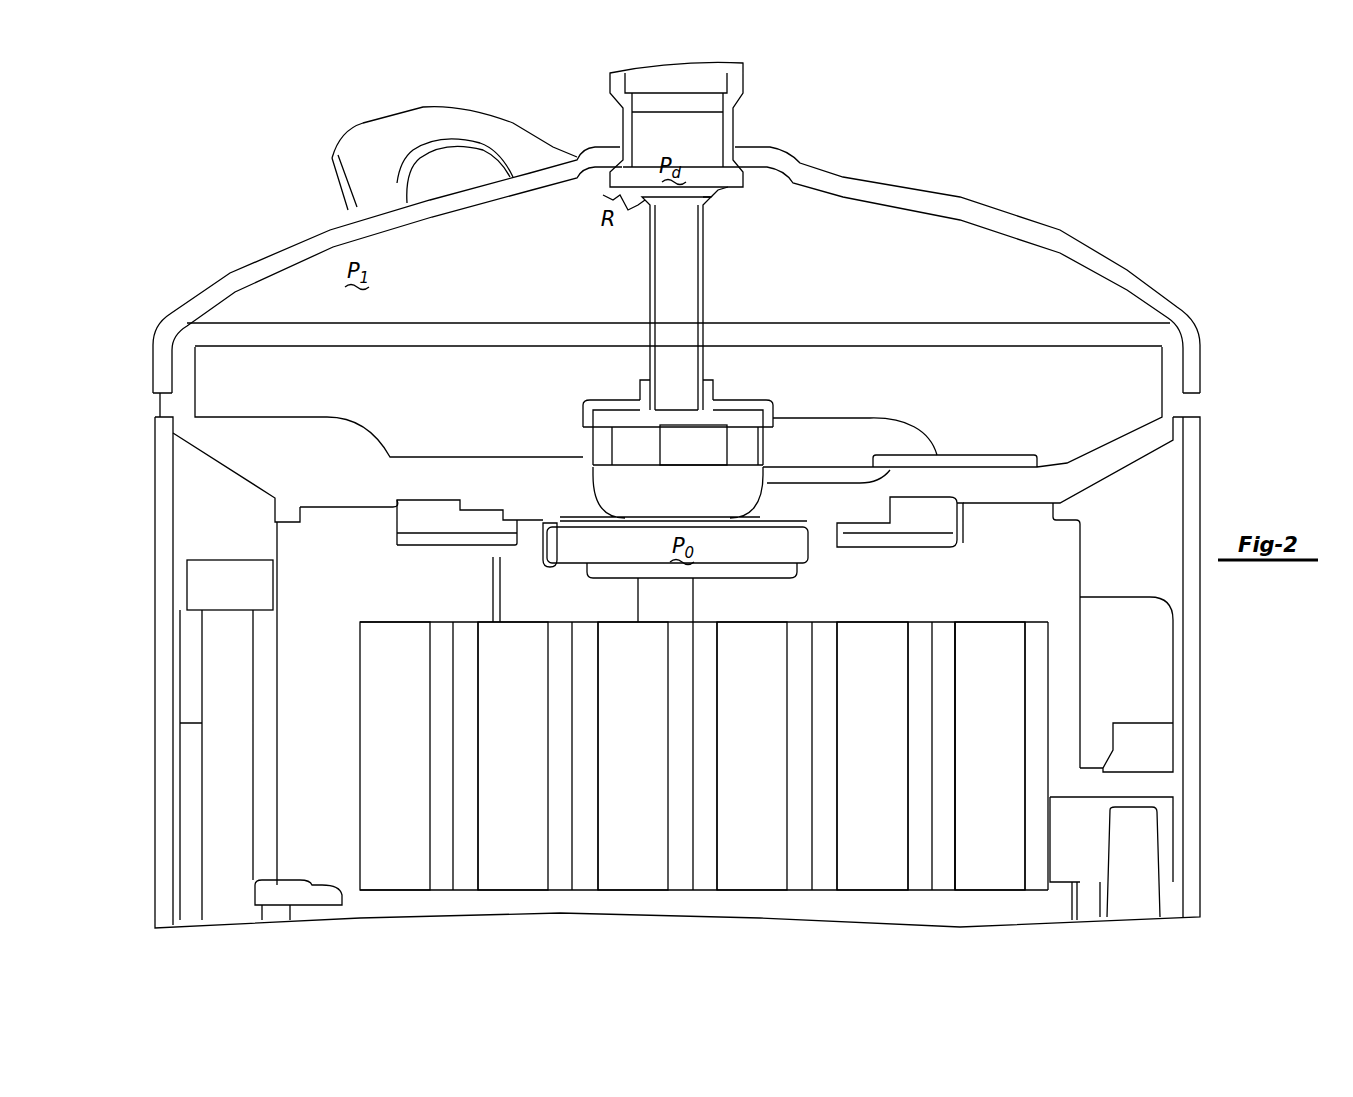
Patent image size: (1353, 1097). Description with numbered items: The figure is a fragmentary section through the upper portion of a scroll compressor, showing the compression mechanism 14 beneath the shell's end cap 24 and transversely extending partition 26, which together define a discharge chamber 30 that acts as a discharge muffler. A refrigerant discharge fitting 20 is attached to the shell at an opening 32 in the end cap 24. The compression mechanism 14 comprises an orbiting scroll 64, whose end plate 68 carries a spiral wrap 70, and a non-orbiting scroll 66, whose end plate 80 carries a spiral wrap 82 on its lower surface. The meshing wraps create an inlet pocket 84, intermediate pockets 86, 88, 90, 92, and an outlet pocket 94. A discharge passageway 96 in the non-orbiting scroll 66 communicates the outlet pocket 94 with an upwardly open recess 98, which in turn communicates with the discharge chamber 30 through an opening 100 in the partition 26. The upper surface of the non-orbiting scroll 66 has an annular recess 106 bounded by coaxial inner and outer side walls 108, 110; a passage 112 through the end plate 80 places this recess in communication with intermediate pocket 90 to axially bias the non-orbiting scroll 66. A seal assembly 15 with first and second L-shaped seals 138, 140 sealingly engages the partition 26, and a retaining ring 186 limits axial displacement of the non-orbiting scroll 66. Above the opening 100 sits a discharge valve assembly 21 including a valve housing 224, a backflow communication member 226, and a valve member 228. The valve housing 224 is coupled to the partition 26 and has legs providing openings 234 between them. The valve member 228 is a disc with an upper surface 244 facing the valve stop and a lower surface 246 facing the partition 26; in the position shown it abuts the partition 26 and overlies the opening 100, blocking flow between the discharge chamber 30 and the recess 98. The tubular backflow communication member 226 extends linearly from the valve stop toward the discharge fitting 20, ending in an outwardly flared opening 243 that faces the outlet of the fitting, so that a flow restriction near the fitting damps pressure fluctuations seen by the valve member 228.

The compression mechanism 14 is at (1143, 532).
The seal assembly 15 is at (473, 487).
The refrigerant discharge fitting 20 is at (740, 112).
The discharge valve assembly 21 is at (716, 372).
The end cap 24 is at (960, 205).
The transversely extending partition 26 is at (997, 480).
The discharge chamber 30 is at (490, 240).
The opening 32 is at (620, 150).
The orbiting scroll 64 is at (1063, 907).
The non-orbiting scroll 66 is at (1080, 578).
The end plate 68 is at (913, 910).
The spiral wrap 70 is at (1030, 813).
The end plate 80 is at (1040, 557).
The spiral wrap 82 is at (947, 710).
The inlet pocket 84 is at (980, 766).
The intermediate pocket 86 is at (863, 766).
The intermediate pocket 88 is at (735, 766).
The intermediate pocket 90 is at (499, 766).
The intermediate pocket 92 is at (380, 766).
The outlet pocket 94 is at (615, 766).
The discharge passageway 96 is at (652, 619).
The recess 98 is at (560, 560).
The opening 100 is at (620, 505).
The annular recess 106 is at (927, 547).
The inner side wall 108 is at (527, 523).
The outer side wall 110 is at (318, 510).
The passage 112 is at (490, 593).
The first seal 138 is at (550, 520).
The second seal 140 is at (397, 503).
The retaining ring 186 is at (1160, 678).
The valve housing 224 is at (625, 410).
The backflow communication member 226 is at (648, 263).
The valve member 228 is at (623, 417).
The openings 234 is at (677, 456).
The outwardly flared opening 243 is at (710, 185).
The upper surface 244 is at (740, 420).
The lower surface 246 is at (720, 490).